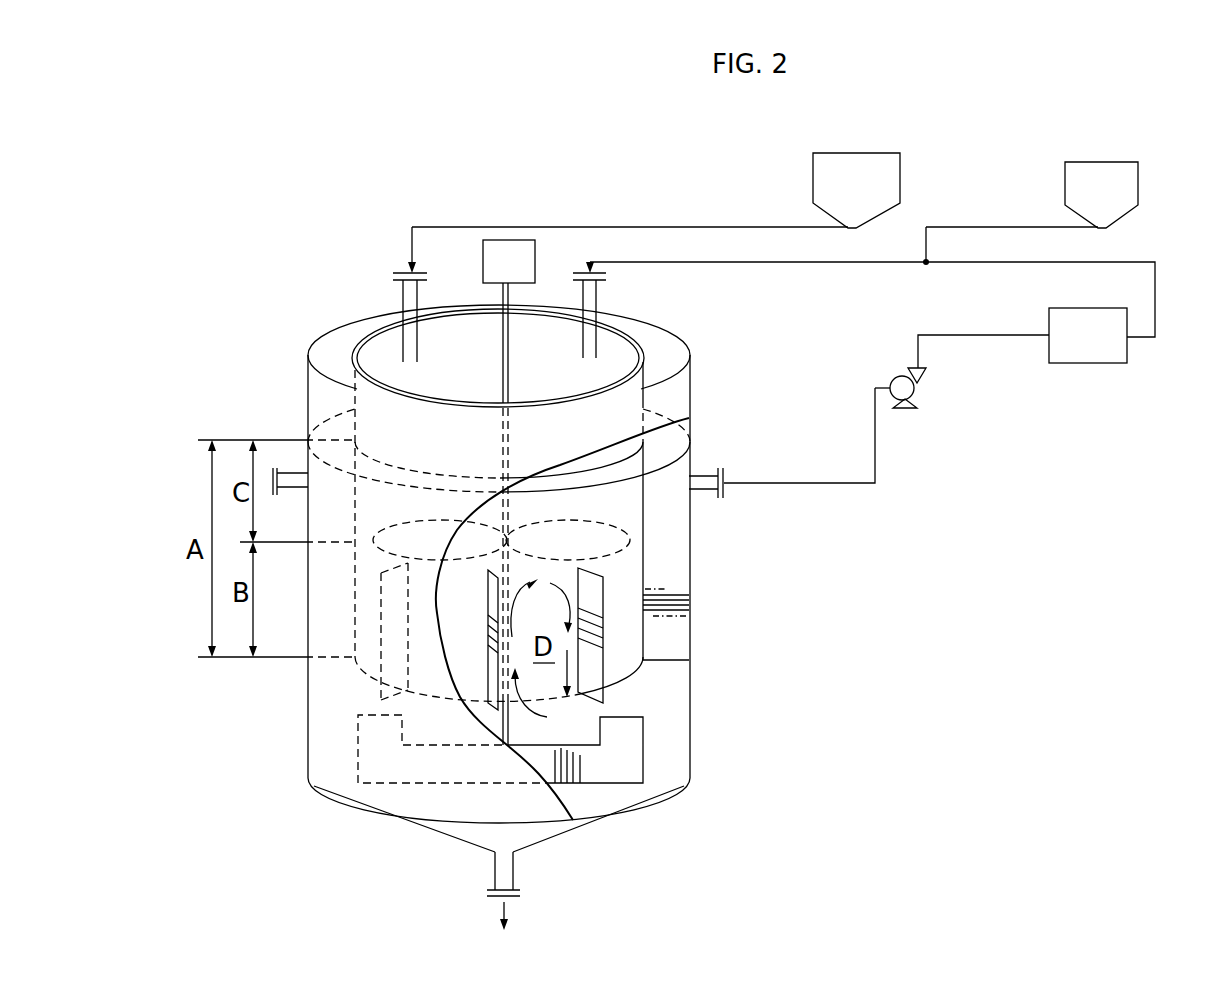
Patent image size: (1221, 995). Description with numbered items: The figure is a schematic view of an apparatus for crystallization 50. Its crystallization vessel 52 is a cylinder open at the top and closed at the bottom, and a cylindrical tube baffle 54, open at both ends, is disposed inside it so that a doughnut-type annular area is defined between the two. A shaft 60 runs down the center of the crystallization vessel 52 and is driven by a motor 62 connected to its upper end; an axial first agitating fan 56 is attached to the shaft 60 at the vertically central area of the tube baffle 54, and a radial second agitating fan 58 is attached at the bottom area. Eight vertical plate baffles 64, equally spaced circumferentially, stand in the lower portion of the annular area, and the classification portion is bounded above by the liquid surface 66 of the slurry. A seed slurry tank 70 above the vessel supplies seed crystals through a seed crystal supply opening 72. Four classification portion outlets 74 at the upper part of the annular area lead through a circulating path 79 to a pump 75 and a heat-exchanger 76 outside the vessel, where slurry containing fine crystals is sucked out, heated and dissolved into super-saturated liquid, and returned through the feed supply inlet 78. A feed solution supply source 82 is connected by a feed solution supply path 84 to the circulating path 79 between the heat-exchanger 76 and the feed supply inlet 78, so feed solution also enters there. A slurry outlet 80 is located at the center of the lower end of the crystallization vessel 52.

The apparatus for crystallization 50 is at (742, 618).
The crystallization vessel 52 is at (693, 417).
The tube baffle 54 is at (647, 366).
The first agitating fan 56 is at (630, 522).
The second agitating fan 58 is at (646, 752).
The shaft 60 is at (503, 352).
The motor 62 is at (483, 265).
The plate baffles 64 is at (665, 652).
The liquid surface 66 is at (608, 486).
The seed slurry tank 70 is at (900, 178).
The seed crystal supply opening 72 is at (403, 297).
The classification portion outlets 74 is at (703, 473).
The pump 75 is at (918, 393).
The heat-exchanger 76 is at (1090, 366).
The feed supply inlet 78 is at (596, 290).
The circulating path 79 is at (818, 483).
The slurry outlet 80 is at (513, 878).
The feed solution supply source 82 is at (1138, 183).
The feed solution supply path 84 is at (1020, 227).